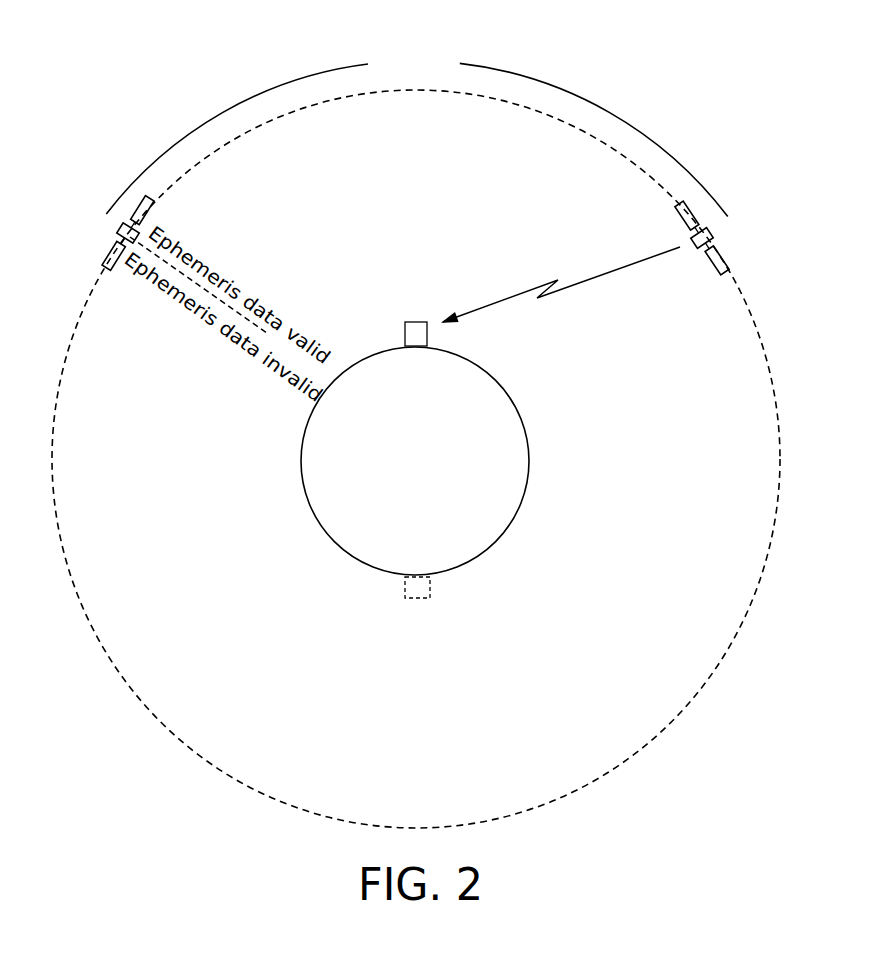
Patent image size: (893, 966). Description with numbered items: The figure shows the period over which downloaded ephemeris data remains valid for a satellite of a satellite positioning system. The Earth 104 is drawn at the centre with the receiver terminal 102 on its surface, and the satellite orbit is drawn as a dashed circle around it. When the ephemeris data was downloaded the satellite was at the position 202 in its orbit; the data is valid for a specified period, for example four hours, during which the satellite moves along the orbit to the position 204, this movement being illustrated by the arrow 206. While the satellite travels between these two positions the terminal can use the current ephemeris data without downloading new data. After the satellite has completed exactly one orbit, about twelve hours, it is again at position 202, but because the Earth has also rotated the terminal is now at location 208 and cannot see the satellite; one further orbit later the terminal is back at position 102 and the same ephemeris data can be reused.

The receiver terminal 102 is at (417, 322).
The Earth 104 is at (438, 474).
The satellite position at ephemeris download 202 is at (717, 227).
The satellite position at end of validity period 204 is at (120, 225).
The arrow 206 is at (500, 70).
The terminal location after one orbit 208 is at (417, 600).